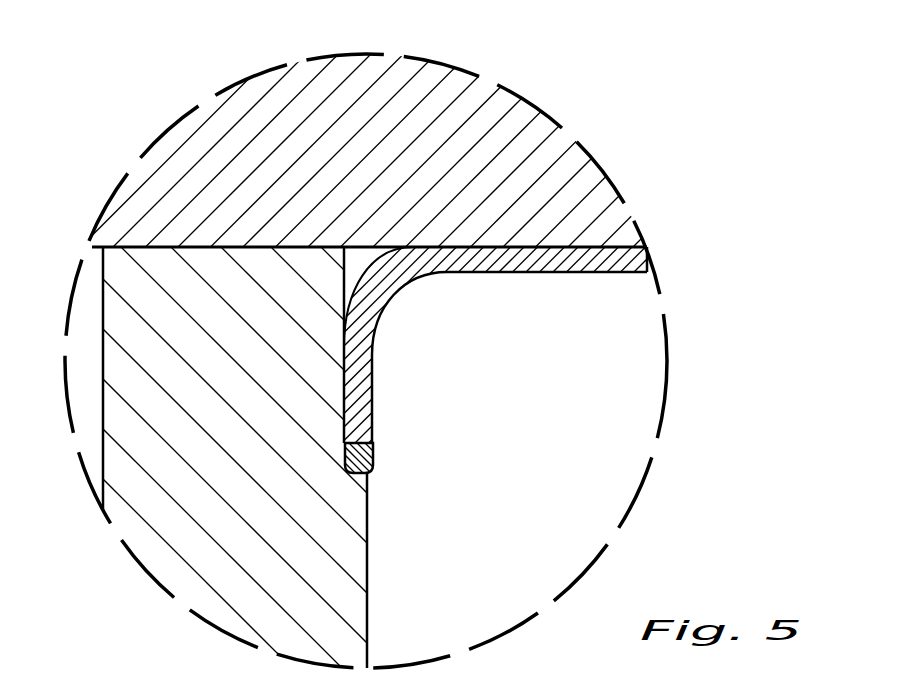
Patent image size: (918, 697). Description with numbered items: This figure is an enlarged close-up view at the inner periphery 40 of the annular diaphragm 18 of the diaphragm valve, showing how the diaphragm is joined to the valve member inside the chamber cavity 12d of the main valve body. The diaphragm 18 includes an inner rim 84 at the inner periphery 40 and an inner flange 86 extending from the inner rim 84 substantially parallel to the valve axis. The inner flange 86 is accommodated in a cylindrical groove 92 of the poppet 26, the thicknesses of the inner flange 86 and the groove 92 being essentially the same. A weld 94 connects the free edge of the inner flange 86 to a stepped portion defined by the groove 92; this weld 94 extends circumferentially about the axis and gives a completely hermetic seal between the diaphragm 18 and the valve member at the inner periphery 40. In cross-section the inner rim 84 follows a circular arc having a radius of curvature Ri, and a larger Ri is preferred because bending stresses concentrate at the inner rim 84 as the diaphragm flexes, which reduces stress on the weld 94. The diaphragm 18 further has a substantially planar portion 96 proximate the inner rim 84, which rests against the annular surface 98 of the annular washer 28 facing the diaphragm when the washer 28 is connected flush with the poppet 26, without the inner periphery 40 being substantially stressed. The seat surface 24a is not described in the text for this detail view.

The chamber cavity 12d is at (650, 368).
The annular diaphragm 18 is at (638, 261).
The seat surface 24a is at (222, 693).
The poppet 26 is at (160, 553).
The annular washer 28 is at (538, 142).
The inner periphery 40 is at (497, 405).
The inner rim 84 is at (372, 307).
The inner flange 86 is at (360, 388).
The cylindrical groove 92 is at (350, 292).
The weld 94 is at (365, 460).
The planar portion 96 is at (508, 262).
The annular surface 98 is at (383, 252).
The radius of curvature Ri is at (420, 297).